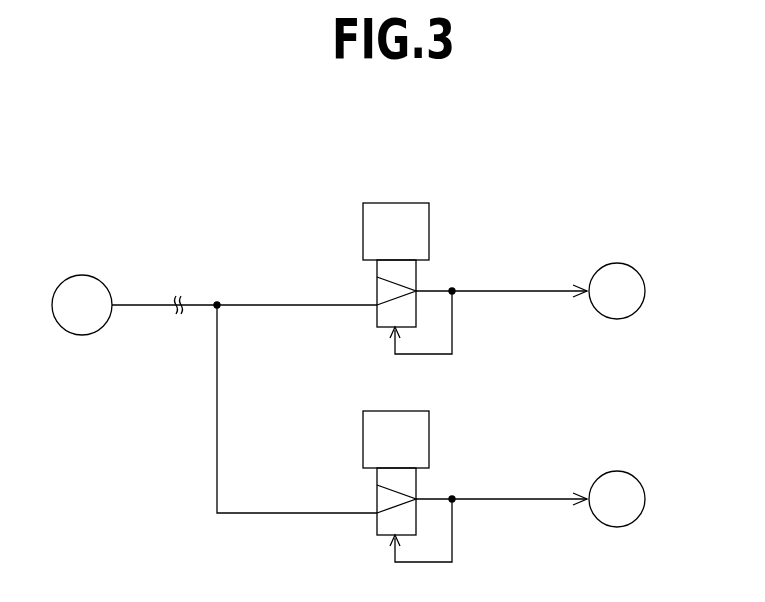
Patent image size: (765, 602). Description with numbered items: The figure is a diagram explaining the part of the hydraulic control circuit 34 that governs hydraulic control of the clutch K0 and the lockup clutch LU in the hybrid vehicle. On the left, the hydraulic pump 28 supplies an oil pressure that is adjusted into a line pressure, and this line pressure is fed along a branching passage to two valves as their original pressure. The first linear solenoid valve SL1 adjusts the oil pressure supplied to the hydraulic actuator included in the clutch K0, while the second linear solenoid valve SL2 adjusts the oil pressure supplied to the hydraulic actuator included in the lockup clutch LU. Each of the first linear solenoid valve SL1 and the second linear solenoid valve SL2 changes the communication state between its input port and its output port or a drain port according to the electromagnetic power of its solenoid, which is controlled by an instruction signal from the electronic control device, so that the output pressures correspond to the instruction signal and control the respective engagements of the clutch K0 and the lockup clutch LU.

The hydraulic control circuit 34 is at (183, 144).
The hydraulic pump 28 is at (82, 293).
The first linear solenoid valve SL1 is at (393, 213).
The second linear solenoid valve SL2 is at (393, 421).
The clutch K0 is at (617, 273).
The lockup clutch LU is at (617, 481).